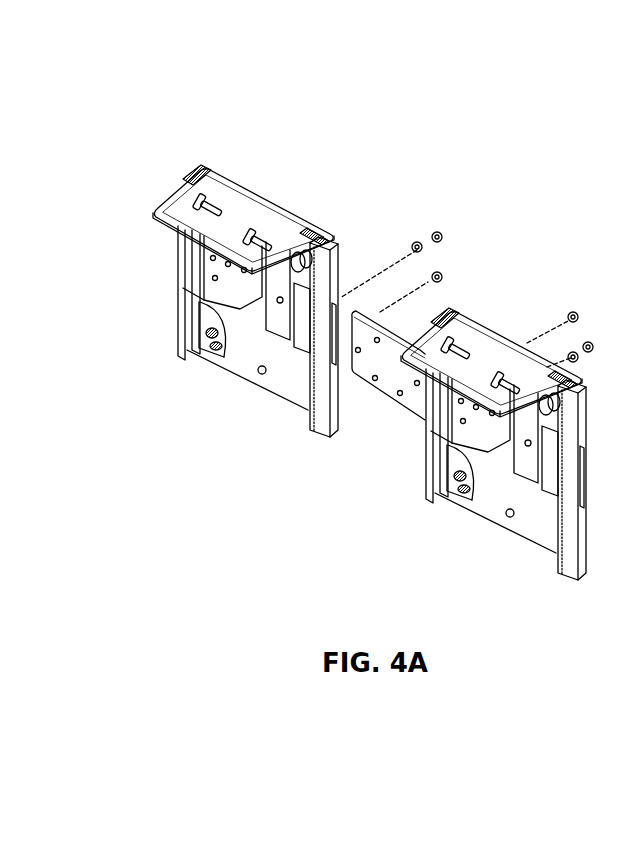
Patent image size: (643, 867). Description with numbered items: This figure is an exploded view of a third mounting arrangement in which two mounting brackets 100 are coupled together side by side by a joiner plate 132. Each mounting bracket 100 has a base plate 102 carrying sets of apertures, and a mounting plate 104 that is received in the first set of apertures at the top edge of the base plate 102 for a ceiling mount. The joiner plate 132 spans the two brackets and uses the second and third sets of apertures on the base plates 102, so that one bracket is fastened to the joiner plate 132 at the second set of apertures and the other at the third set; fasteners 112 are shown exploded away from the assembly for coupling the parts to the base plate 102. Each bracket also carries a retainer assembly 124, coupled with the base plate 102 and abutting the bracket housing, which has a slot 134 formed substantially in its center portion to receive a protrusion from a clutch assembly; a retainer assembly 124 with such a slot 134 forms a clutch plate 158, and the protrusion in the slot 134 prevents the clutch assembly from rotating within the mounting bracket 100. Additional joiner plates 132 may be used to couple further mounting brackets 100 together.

The mounting bracket 100 is at (233, 136).
The base plate 102 is at (268, 193).
The mounting plate 104 is at (168, 174).
The fasteners 112 is at (440, 232).
The retainer assembly 124 is at (278, 303).
The joiner plate 132 is at (389, 407).
The slot 134 is at (284, 292).
The clutch plate 158 is at (250, 293).